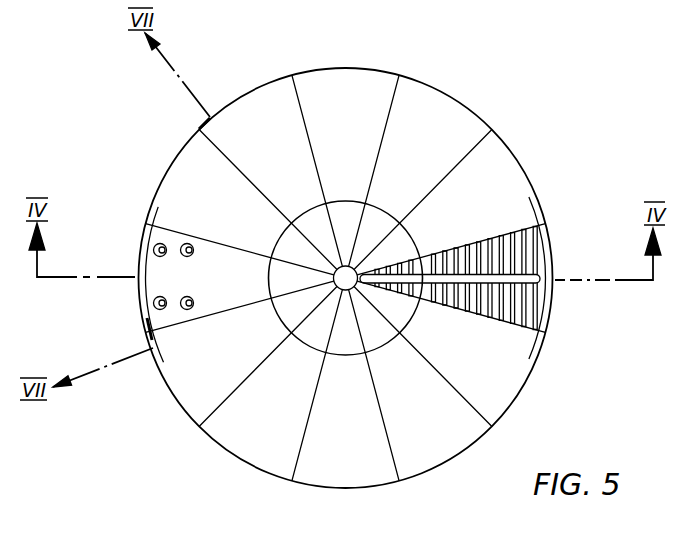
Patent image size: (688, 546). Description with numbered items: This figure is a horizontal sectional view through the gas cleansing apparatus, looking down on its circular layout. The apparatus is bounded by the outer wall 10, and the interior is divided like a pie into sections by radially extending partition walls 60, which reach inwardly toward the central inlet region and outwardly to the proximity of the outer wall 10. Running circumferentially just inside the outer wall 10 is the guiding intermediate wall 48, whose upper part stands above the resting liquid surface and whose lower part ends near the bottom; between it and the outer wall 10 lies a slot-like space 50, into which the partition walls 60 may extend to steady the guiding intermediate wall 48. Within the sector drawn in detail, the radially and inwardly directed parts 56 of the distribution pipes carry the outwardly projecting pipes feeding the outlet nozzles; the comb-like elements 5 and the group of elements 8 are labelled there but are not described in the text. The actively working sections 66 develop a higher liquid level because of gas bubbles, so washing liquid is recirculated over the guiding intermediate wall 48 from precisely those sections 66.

The fin 5 is at (453, 257).
The fins 8 is at (512, 249).
The outer wall 10 is at (547, 295).
The guiding intermediate wall 48 is at (545, 238).
The slot-like space 50 is at (547, 267).
The radially and inwardly directed parts 56 is at (547, 307).
The partition walls 60 is at (302, 442).
The gas cleansing sections 66 is at (312, 473).